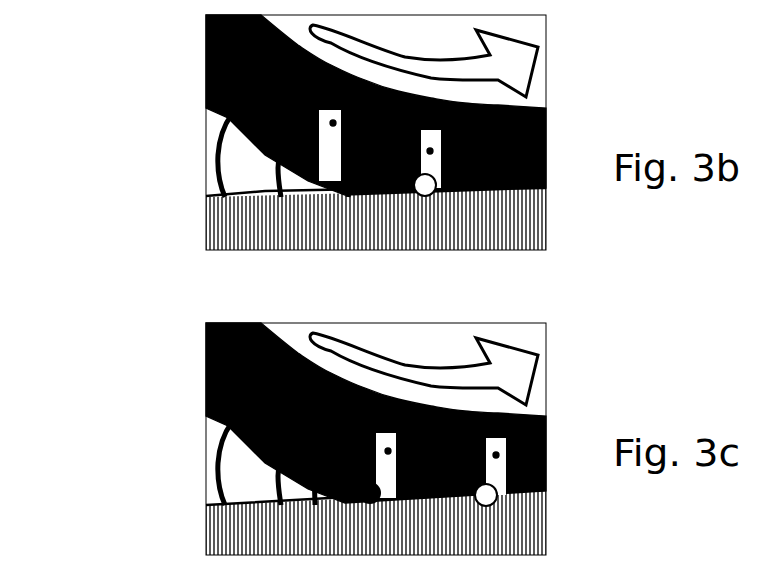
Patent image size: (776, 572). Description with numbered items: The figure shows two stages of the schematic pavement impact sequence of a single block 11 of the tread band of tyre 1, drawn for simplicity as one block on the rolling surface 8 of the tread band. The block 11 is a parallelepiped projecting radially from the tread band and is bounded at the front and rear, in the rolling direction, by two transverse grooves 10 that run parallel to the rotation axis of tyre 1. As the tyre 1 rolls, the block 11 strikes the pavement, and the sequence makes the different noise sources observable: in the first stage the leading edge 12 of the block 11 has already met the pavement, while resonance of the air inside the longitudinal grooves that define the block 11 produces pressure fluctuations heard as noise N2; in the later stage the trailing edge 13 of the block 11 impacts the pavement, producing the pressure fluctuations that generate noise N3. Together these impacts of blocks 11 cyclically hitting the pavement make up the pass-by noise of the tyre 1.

In FIG. 3b, the tyre 1 is at (158, 61).
In FIG. 3c, the tyre 1 is at (178, 277).
In FIG. 3b, the rolling surface 8 is at (204, 109).
In FIG. 3c, the rolling surface 8 is at (204, 413).
In FIG. 3b, the noise N2 is at (212, 159).
In FIG. 3c, the noise N3 is at (214, 470).
In FIG. 3b, the transverse grooves 10 is at (340, 67).
In FIG. 3c, the transverse grooves 10 is at (382, 388).
In FIG. 3b, the block 11 is at (372, 184).
In FIG. 3c, the block 11 is at (423, 489).
In FIG. 3b, the leading edge 12 is at (418, 189).
In FIG. 3c, the leading edge 12 is at (492, 484).
In FIG. 3b, the trailing edge 13 is at (299, 164).
In FIG. 3c, the trailing edge 13 is at (330, 372).